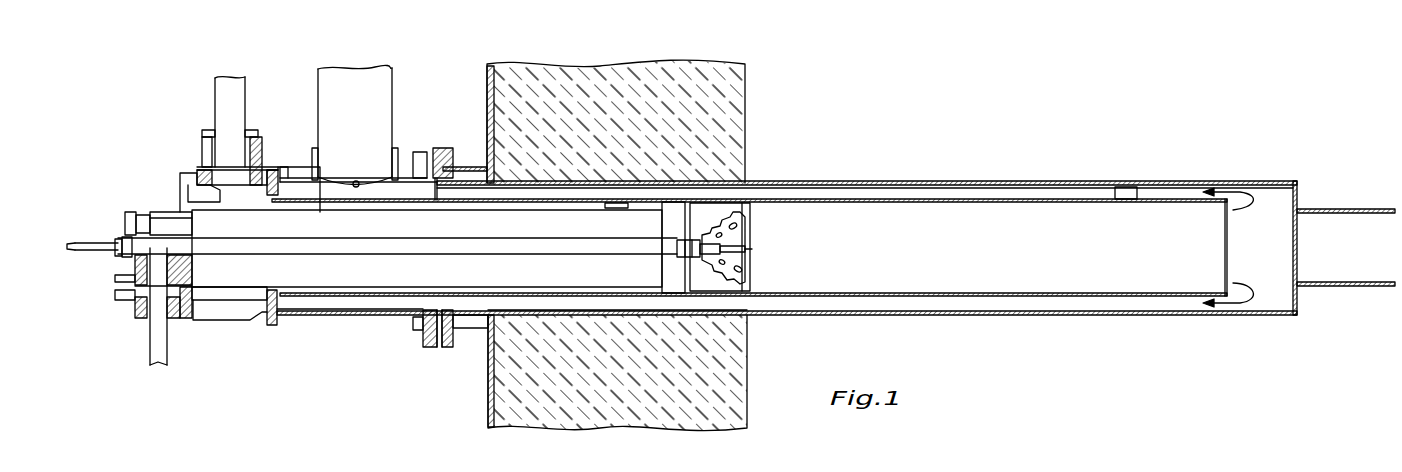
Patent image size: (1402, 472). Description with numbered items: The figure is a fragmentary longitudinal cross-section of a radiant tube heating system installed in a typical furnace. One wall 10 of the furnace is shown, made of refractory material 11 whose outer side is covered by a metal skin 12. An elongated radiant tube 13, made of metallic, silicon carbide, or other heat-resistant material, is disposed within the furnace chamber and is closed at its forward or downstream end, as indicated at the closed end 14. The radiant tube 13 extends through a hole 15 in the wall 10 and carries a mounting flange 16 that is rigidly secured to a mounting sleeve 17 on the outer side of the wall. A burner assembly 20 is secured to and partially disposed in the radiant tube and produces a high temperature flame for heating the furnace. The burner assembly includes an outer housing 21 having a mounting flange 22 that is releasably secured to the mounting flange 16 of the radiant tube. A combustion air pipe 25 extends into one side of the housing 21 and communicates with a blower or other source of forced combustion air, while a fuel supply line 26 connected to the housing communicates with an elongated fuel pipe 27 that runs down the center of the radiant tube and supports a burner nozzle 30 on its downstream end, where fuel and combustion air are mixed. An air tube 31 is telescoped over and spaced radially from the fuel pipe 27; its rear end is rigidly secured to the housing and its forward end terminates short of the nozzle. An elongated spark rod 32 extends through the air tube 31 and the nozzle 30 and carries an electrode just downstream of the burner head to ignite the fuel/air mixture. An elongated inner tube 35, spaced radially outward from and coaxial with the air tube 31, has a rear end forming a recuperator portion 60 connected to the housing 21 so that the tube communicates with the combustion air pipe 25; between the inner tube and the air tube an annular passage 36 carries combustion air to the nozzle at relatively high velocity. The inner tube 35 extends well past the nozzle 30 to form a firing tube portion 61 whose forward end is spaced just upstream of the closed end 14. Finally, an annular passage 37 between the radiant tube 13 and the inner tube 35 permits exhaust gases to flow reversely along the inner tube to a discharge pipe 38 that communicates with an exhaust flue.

The wall 10 is at (788, 117).
The refractory material 11 is at (558, 78).
The metal skin 12 is at (488, 103).
The radiant tube 13 is at (1243, 314).
The closed end 14 is at (1293, 205).
The hole 15 is at (548, 310).
The mounting flange 16 is at (442, 347).
The mounting sleeve 17 is at (477, 328).
The burner assembly 20 is at (380, 303).
The outer housing 21 is at (312, 315).
The mounting flange 22 is at (423, 345).
The combustion air pipe 25 is at (223, 98).
The fuel supply line 26 is at (155, 345).
The fuel pipe 27 is at (250, 240).
The burner nozzle 30 is at (742, 234).
The air tube 31 is at (317, 212).
The spark rod 32 is at (740, 253).
The inner tube 35 is at (518, 210).
The annular passage 36 is at (418, 205).
The annular passage 37 is at (1172, 192).
The discharge pipe 38 is at (347, 82).
The recuperator portion 60 is at (580, 198).
The firing tube portion 61 is at (920, 200).